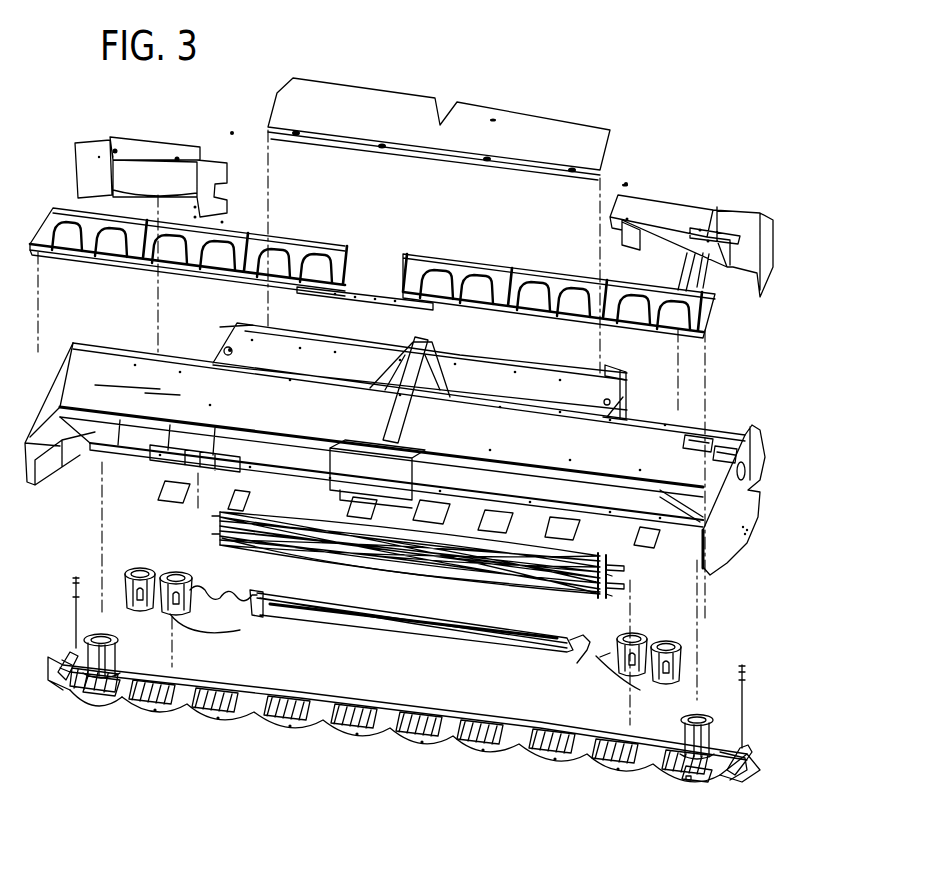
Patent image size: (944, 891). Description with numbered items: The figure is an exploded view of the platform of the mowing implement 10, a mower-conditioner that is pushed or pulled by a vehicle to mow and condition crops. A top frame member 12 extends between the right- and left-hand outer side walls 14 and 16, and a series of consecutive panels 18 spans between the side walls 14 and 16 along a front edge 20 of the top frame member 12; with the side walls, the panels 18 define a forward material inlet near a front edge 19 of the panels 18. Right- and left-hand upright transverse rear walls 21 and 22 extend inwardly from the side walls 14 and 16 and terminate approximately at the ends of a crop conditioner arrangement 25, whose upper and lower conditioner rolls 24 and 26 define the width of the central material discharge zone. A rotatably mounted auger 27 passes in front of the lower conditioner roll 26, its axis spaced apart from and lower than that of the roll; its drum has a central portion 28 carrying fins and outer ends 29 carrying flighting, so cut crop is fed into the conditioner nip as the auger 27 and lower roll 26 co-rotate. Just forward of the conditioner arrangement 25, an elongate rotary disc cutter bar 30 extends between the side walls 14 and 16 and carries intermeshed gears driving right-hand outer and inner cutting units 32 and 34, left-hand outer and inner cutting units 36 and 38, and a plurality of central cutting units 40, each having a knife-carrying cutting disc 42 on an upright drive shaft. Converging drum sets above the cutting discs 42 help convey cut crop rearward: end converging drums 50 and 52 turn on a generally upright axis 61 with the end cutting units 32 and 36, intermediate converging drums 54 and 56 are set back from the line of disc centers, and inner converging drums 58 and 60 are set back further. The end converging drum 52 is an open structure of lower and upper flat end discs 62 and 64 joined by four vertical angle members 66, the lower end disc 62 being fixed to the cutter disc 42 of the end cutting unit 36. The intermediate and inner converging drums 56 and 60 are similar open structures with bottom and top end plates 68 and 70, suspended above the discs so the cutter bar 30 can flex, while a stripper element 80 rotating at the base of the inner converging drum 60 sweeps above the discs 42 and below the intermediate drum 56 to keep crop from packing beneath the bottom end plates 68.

The mowing implement 10 is at (546, 60).
The top frame member 12 is at (137, 372).
The right-hand outer side wall 14 is at (33, 432).
The left-hand outer side wall 16 is at (757, 497).
The panels 18 is at (460, 272).
The front edge of the panels 19 is at (60, 256).
The front edge of the top frame member 20 is at (215, 425).
The right-hand upright transverse rear wall 21 is at (150, 140).
The left-hand upright transverse rear wall 22 is at (667, 212).
The upper conditioner roll 24 is at (217, 517).
The crop conditioner arrangement 25 is at (655, 582).
The lower conditioner roll 26 is at (222, 543).
The auger 27 is at (392, 648).
The central portion 28 is at (423, 624).
The outer ends 29 is at (240, 600).
The rotary disc cutter bar 30 is at (360, 838).
The right-hand outer cutting unit 32 is at (90, 712).
The right-hand inner cutting unit 34 is at (156, 722).
The left-hand outer cutting unit 36 is at (686, 788).
The left-hand inner cutting unit 38 is at (617, 780).
The central cutting units 40 is at (218, 730).
The knife-carrying cutting disc 42 is at (700, 767).
The right-hand end converging drum 50 is at (72, 640).
The left-hand end converging drum 52 is at (722, 724).
The right-hand intermediate converging drum 54 is at (125, 560).
The left-hand intermediate converging drum 56 is at (697, 660).
The right-hand inner converging drum 58 is at (203, 622).
The left-hand inner converging drum 60 is at (683, 634).
The upright axis 61 is at (170, 648).
The lower flat end disc 62 is at (108, 694).
The upper flat end disc 64 is at (117, 640).
The vertical angle members 66 is at (68, 685).
The bottom end plate 68 is at (110, 610).
The top end plate 70 is at (126, 572).
The stripper element 80 is at (170, 616).